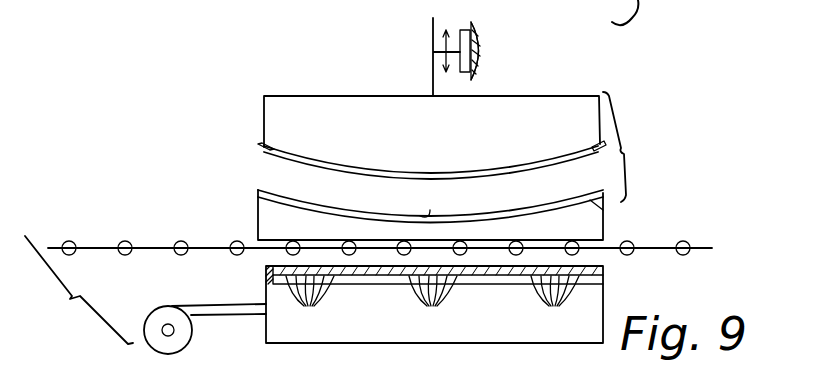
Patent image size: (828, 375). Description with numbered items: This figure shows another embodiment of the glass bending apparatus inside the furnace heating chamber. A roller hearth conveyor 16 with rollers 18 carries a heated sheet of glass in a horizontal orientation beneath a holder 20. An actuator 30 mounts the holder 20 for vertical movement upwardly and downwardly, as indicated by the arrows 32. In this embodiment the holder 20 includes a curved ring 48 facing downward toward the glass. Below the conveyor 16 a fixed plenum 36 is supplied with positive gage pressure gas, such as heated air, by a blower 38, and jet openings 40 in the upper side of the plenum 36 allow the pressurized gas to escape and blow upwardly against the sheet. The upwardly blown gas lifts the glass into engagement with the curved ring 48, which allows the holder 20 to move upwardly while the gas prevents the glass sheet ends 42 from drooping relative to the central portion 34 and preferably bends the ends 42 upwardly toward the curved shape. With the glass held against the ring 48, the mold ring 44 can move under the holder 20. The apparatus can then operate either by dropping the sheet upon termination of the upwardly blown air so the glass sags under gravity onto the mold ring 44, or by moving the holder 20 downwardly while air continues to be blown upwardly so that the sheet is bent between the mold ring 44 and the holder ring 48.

The roller hearth conveyor 16 is at (70, 232).
The rollers 18 is at (178, 240).
The holder 20 is at (264, 96).
The actuator 30 is at (481, 57).
The arrows 32 is at (452, 30).
The central portion 34 is at (478, 213).
The fixed plenum 36 is at (465, 304).
The blower 38 is at (190, 326).
The jet openings 40 is at (432, 307).
The glass sheet ends 42 is at (258, 190).
The mold ring 44 is at (591, 201).
The curved ring 48 is at (262, 146).